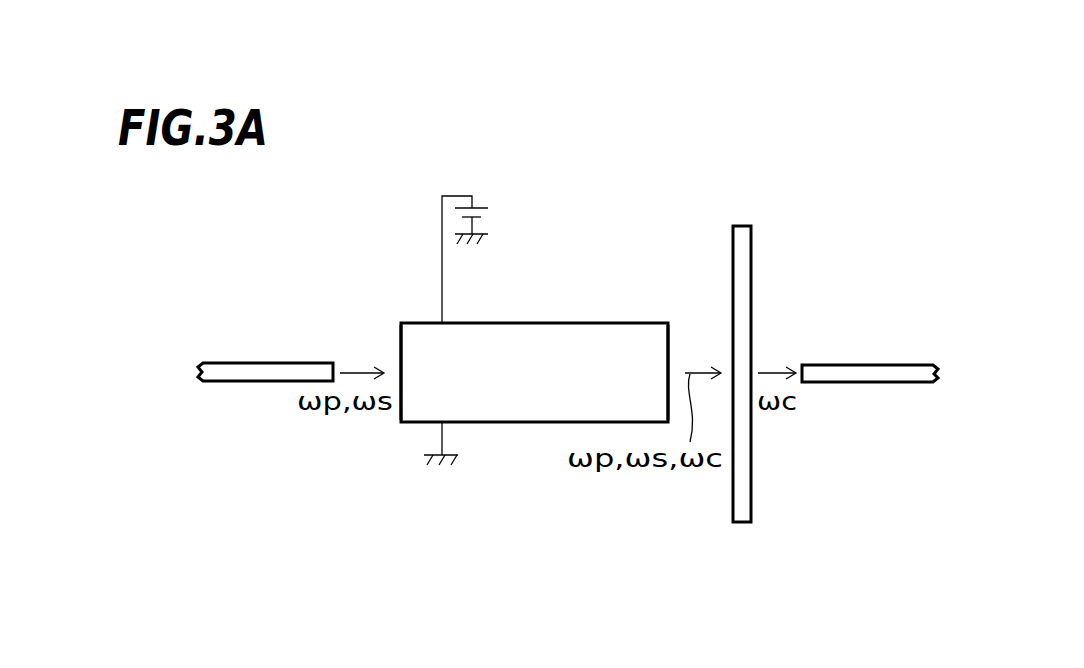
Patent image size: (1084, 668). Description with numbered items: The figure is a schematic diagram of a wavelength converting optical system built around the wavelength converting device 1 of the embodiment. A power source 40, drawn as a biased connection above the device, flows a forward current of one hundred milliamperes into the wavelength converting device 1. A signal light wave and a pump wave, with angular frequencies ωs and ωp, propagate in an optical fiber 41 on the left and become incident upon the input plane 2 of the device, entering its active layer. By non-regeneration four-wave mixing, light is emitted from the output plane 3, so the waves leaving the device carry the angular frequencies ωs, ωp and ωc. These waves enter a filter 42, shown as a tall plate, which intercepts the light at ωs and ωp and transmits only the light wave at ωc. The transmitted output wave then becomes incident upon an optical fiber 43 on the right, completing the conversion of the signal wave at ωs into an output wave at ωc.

The wavelength converting device 1 is at (536, 321).
The input plane 2 is at (388, 347).
The output plane 3 is at (681, 348).
The power source 40 is at (478, 206).
The optical fiber 41 is at (277, 362).
The filter 42 is at (753, 248).
The optical fiber 43 is at (883, 363).